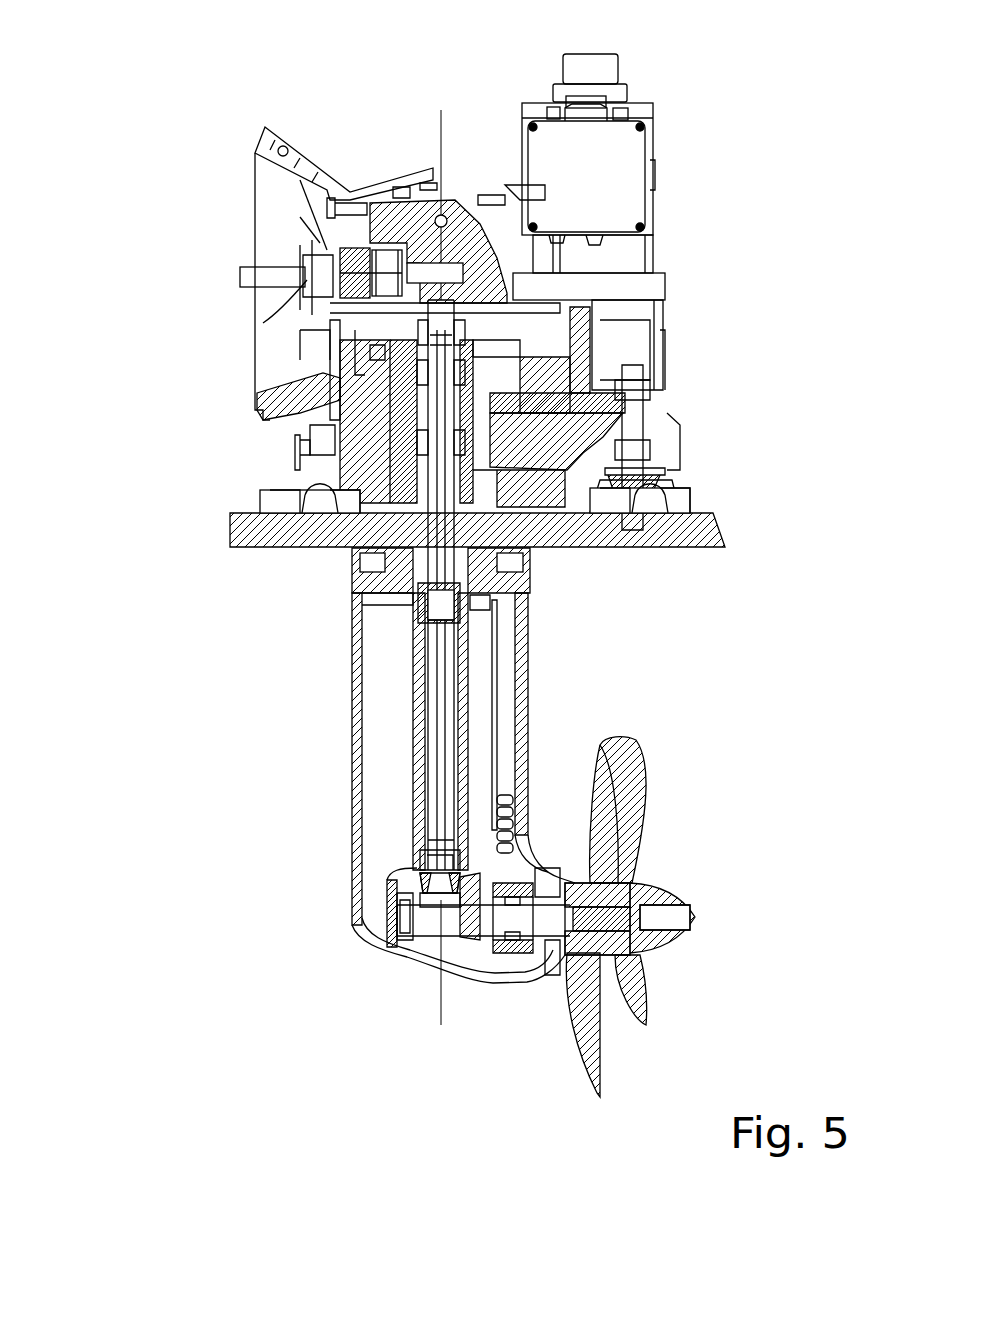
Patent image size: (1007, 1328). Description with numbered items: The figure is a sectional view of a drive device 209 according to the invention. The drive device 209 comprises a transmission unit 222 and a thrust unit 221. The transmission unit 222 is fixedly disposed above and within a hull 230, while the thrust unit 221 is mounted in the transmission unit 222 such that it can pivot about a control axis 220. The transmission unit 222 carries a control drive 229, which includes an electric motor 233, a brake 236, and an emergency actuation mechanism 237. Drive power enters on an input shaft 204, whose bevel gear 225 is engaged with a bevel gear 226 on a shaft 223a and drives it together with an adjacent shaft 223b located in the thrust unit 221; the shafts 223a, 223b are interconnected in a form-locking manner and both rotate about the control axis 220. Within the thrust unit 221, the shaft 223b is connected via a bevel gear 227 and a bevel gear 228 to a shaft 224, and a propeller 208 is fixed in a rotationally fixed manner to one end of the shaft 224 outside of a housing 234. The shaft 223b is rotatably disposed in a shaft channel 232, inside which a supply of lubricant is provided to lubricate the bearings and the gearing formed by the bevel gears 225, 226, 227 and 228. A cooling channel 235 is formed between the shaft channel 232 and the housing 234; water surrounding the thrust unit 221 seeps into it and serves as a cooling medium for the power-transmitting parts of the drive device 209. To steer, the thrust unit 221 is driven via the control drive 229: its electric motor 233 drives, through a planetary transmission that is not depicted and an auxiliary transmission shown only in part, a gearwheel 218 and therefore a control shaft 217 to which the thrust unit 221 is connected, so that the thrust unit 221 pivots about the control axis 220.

The input shaft 204 is at (277, 272).
The propeller 208 is at (625, 808).
The drive device 209 is at (707, 907).
The control shaft 217 is at (667, 414).
The gearwheel 218 is at (367, 402).
The control axis 220 is at (442, 730).
The thrust unit 221 is at (530, 675).
The transmission unit 222 is at (250, 136).
The shaft 223a is at (443, 422).
The shaft 223b is at (413, 823).
The shaft 224 is at (437, 917).
The bevel gear 225 is at (403, 273).
The bevel gear 226 is at (507, 303).
The bevel gear 227 is at (432, 878).
The bevel gear 228 is at (455, 967).
The control drive 229 is at (662, 135).
The hull 230 is at (280, 540).
The shaft channel 232 is at (433, 813).
The electric motor 233 is at (620, 255).
The housing 234 is at (527, 627).
The cooling channel 235 is at (387, 707).
The brake 236 is at (615, 92).
The emergency actuation mechanism 237 is at (590, 70).